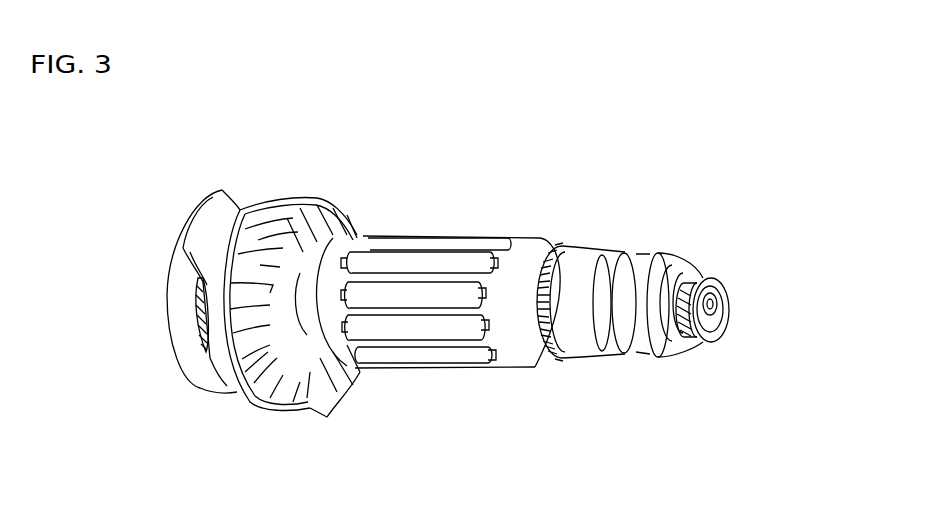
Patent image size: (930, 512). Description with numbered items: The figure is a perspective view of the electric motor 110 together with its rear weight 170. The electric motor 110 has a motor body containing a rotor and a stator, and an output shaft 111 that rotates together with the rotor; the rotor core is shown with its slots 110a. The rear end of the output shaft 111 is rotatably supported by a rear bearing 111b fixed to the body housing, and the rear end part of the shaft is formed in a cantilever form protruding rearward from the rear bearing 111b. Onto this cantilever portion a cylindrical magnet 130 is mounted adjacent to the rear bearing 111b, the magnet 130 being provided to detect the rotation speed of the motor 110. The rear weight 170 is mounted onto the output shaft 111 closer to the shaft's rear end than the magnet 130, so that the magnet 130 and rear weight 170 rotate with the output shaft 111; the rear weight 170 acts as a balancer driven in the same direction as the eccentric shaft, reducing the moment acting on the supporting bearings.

The electric motor 110 is at (454, 339).
The slots 110a is at (458, 352).
The output shaft 111 is at (718, 312).
The rear bearing 111b is at (658, 261).
The magnet 130 is at (673, 323).
The rear weight 170 is at (727, 293).